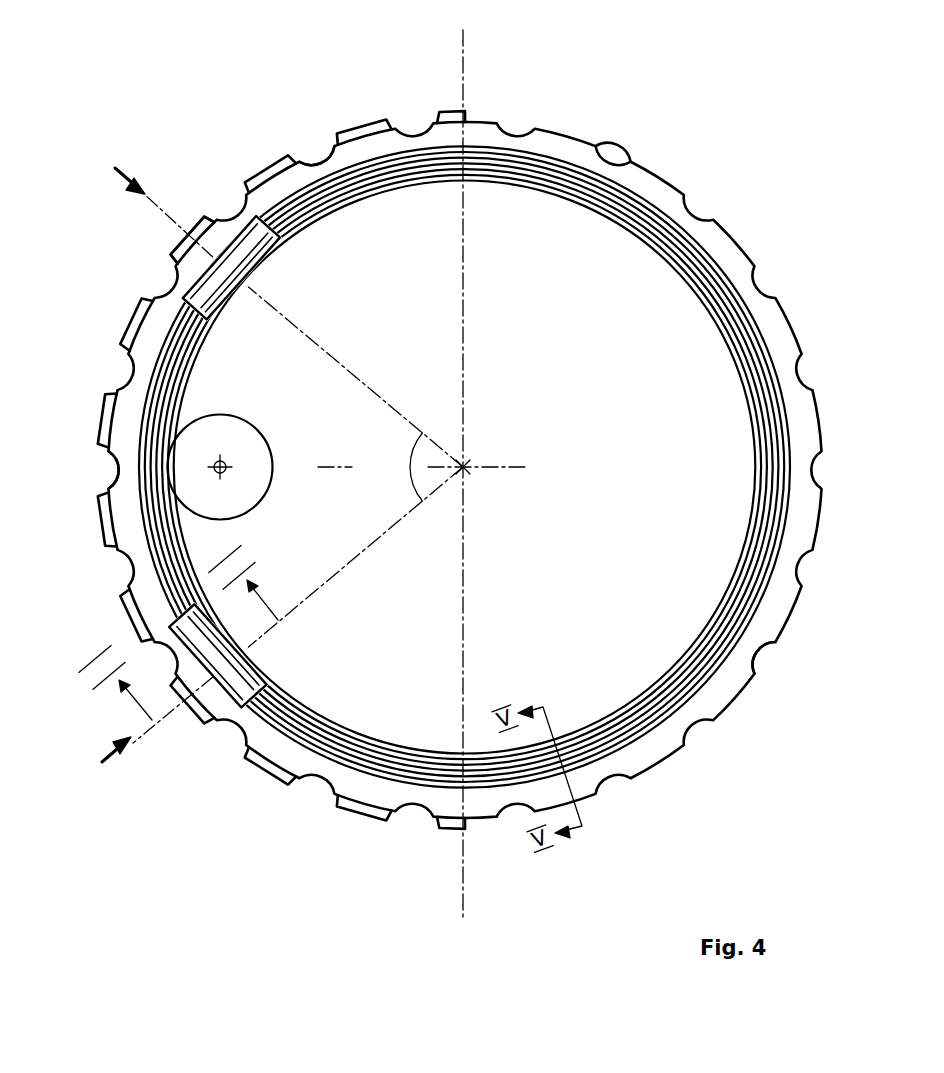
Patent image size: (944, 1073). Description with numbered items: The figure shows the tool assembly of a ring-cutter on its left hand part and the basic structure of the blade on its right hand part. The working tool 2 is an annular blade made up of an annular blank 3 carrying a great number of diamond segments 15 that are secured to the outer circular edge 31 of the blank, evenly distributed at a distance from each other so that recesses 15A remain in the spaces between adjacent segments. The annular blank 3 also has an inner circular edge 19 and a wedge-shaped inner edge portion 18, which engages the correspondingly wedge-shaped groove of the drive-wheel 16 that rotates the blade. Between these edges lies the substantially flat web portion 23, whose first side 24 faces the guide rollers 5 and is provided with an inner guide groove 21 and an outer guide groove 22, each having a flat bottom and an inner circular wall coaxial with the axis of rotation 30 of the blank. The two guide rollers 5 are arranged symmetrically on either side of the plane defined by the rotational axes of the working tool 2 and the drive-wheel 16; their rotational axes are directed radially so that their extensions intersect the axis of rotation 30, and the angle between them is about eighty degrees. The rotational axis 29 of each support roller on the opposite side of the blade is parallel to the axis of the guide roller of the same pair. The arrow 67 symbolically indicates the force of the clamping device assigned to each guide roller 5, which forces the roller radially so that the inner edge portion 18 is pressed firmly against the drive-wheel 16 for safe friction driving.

The working tool 2 is at (185, 205).
The annular blank 3 is at (772, 225).
The guide rollers 5 is at (238, 298).
The diamond segments 15 is at (385, 113).
The recesses 15A is at (320, 155).
The drive-wheel 16 is at (270, 446).
The inner edge portion 18 is at (670, 257).
The inner circular edge 19 is at (616, 225).
The inner guide groove 21 is at (746, 342).
The outer guide groove 22 is at (776, 387).
The web portion 23 is at (721, 243).
The first side 24 is at (488, 316).
The rotational axis of the support roller 29 is at (340, 357).
The axis of rotation 30 is at (465, 466).
The outer circular edge 31 is at (660, 172).
The arrow 67 is at (118, 178).